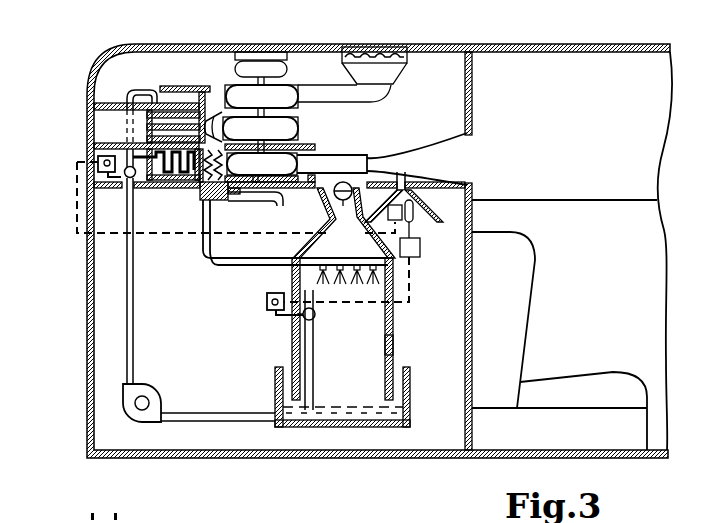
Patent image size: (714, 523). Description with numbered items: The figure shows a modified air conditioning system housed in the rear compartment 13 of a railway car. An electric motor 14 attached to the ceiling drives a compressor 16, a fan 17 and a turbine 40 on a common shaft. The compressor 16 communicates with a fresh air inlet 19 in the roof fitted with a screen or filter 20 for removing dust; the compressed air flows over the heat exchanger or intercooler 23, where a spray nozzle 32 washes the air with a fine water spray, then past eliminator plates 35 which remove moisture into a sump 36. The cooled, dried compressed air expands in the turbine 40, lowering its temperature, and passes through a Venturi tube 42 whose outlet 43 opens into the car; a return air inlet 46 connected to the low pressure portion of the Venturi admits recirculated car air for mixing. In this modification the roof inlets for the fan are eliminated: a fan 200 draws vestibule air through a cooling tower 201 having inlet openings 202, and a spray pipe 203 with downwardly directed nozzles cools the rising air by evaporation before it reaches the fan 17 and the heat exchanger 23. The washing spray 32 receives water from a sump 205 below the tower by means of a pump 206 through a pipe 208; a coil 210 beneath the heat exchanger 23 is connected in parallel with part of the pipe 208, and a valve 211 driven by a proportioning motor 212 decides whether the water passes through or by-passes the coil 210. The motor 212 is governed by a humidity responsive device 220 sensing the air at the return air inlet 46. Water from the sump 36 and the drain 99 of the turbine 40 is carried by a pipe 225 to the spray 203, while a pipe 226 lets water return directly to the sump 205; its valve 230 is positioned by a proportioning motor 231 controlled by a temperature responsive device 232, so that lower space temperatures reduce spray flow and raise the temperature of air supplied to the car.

The compartment 13 is at (355, 134).
The electric motor 14 is at (233, 64).
The compressor 16 is at (261, 101).
The fan 17 is at (260, 135).
The fresh air inlet 19 is at (379, 50).
The screen or filter 20 is at (360, 51).
The heat exchanger or intercooler 23 is at (187, 110).
The spray nozzle 32 is at (161, 86).
The eliminator plates 35 is at (228, 188).
The sump 36 is at (218, 203).
The turbine 40 is at (261, 167).
The Venturi tube 42 is at (383, 160).
The outlet 43 is at (417, 159).
The return air inlet 46 is at (433, 222).
The drain 99 is at (262, 203).
The fan 200 is at (326, 198).
The cooling tower 201 is at (393, 325).
The inlet openings 202 is at (393, 344).
The spray pipe 203 is at (346, 248).
The sump 205 is at (410, 416).
The pump 206 is at (158, 394).
The pipe 208 is at (134, 305).
The coil 210 is at (180, 182).
The valve 211 is at (120, 190).
The proportioning motor 212 is at (96, 158).
The humidity responsive device 220 is at (413, 195).
The pipe 225 is at (241, 266).
The pipe 226 is at (313, 342).
The valve 230 is at (315, 314).
The proportioning motor 231 is at (267, 304).
The temperature responsive device 232 is at (421, 250).